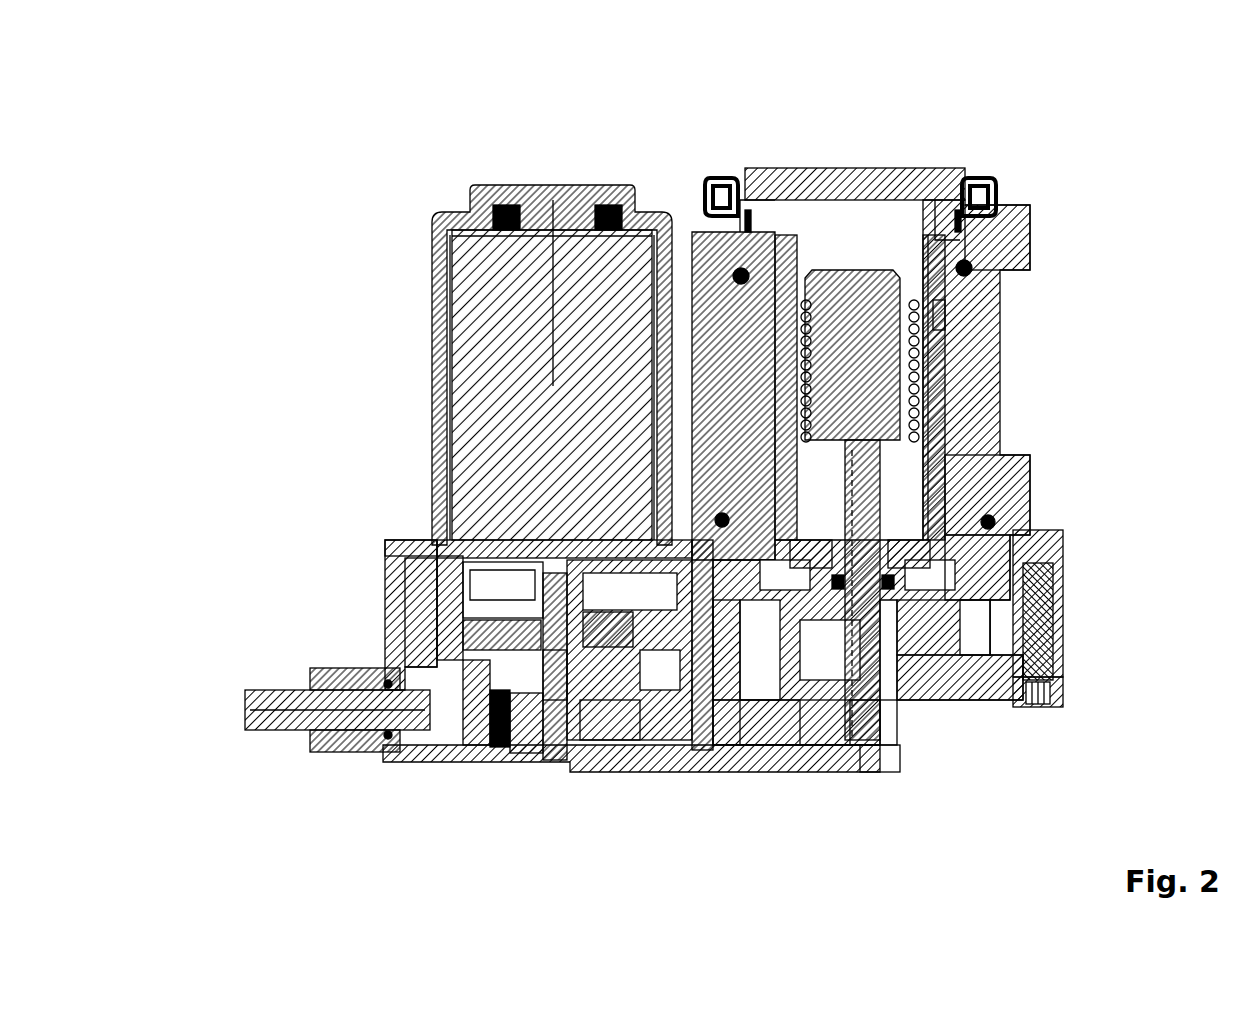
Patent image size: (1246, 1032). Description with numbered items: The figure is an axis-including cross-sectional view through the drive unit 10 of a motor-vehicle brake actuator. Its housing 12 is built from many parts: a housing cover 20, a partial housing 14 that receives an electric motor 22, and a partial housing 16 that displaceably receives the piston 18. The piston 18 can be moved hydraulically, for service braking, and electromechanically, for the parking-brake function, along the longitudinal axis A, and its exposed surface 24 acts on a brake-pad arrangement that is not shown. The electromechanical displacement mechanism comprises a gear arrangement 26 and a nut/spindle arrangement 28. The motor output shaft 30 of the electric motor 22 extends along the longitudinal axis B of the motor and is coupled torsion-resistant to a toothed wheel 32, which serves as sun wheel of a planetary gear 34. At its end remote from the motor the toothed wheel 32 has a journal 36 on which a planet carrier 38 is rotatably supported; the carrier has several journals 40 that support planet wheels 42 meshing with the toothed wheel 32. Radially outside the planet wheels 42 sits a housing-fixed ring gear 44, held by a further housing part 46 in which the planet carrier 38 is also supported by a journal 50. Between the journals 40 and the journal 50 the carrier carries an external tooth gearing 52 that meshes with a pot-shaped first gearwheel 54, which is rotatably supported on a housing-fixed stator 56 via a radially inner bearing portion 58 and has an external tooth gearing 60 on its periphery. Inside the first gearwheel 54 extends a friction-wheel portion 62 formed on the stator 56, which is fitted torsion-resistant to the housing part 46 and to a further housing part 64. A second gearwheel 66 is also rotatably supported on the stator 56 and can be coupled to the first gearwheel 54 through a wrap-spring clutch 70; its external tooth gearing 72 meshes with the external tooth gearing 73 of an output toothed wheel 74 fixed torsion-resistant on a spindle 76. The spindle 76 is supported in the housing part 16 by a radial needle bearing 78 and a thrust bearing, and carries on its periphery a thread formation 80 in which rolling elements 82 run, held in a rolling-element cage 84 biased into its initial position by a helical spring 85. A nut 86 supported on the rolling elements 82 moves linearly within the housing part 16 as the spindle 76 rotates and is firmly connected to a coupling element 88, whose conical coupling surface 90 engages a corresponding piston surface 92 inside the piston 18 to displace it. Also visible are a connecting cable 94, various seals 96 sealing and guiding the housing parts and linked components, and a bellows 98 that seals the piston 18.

The drive unit 10 is at (1036, 170).
The housing 12 is at (405, 762).
The partial housing 14 is at (437, 215).
The partial housing 16 is at (1030, 480).
The piston 18 is at (960, 205).
The housing cover 20 is at (982, 732).
The electric motor 22 is at (553, 200).
The exposed surface 24 is at (788, 170).
The gear arrangement 26 is at (703, 742).
The nut/spindle arrangement 28 is at (1000, 455).
The motor output shaft 30 is at (410, 590).
The toothed wheel 32 is at (510, 762).
The planetary gear 34 is at (380, 752).
The journal 36 is at (548, 757).
The planet carrier 38 is at (560, 757).
The journals 40 is at (430, 598).
The planet wheels 42 is at (480, 630).
The ring gear 44 is at (480, 642).
The housing part 46 is at (780, 742).
The journal 50 is at (577, 757).
The external tooth gearing 52 is at (490, 745).
The first gearwheel 54 is at (872, 762).
The stator 56 is at (742, 742).
The bearing portion 58 is at (672, 765).
The external tooth gearing 60 is at (930, 760).
The friction-wheel portion 62 is at (840, 742).
The housing part 64 is at (395, 555).
The second gearwheel 66 is at (945, 745).
The wrap-spring clutch 70 is at (620, 762).
The external tooth gearing 72 is at (690, 440).
The external tooth gearing 73 is at (1052, 648).
The output toothed wheel 74 is at (975, 690).
The spindle 76 is at (1052, 685).
The radial needle bearing 78 is at (1047, 605).
The thread formation 80 is at (1005, 262).
The rolling elements 82 is at (1005, 415).
The rolling-element cage 84 is at (990, 370).
The helical spring 85 is at (995, 328).
The nut 86 is at (982, 507).
The coupling element 88 is at (1010, 232).
The conical coupling surface 90 is at (758, 190).
The piston surface 92 is at (928, 255).
The connecting cable 94 is at (260, 730).
The seals 96 is at (500, 205).
The bellows 98 is at (1000, 190).
The longitudinal axis A is at (852, 450).
The longitudinal axis of the motor B is at (553, 386).